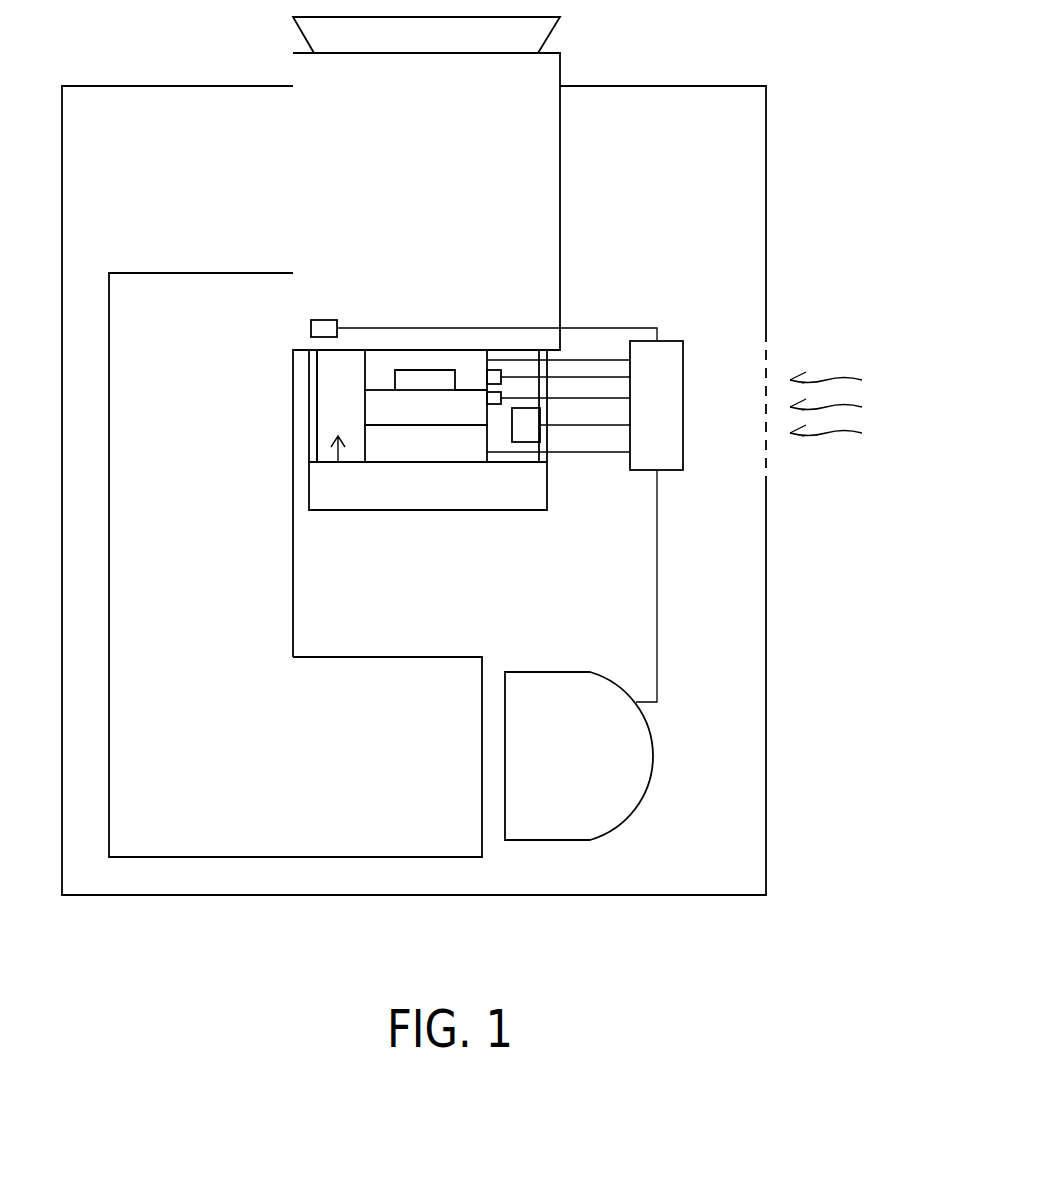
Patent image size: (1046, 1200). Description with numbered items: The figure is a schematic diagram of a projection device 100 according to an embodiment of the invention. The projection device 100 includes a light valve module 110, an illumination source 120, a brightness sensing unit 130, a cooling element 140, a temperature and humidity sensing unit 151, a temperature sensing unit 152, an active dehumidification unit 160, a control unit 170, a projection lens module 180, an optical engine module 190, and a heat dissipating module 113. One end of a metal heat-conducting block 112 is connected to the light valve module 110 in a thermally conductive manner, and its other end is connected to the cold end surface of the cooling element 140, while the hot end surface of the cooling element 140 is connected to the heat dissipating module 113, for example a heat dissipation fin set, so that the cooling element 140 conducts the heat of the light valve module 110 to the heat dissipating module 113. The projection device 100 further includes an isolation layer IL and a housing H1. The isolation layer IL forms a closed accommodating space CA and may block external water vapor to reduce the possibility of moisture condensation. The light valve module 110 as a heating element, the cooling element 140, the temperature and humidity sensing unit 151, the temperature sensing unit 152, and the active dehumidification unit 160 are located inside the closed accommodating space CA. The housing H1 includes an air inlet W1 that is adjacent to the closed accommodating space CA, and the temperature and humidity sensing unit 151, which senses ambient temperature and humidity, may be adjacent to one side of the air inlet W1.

The projection device 100 is at (462, 483).
The light valve module 110 is at (437, 357).
The metal heat-conducting block 112 is at (407, 407).
The heat dissipating module 113 is at (528, 502).
The illumination source 120 is at (565, 841).
The brightness sensing unit 130 is at (323, 323).
The cooling element 140 is at (420, 450).
The temperature and humidity sensing unit 151 is at (497, 372).
The temperature sensing unit 152 is at (497, 405).
The active dehumidification unit 160 is at (535, 433).
The control unit 170 is at (678, 406).
The projection lens module 180 is at (544, 36).
The optical engine module 190 is at (295, 858).
The isolation layer IL is at (313, 452).
The closed accommodating space CA is at (340, 457).
The air inlet W1 is at (800, 350).
The housing H1 is at (766, 660).